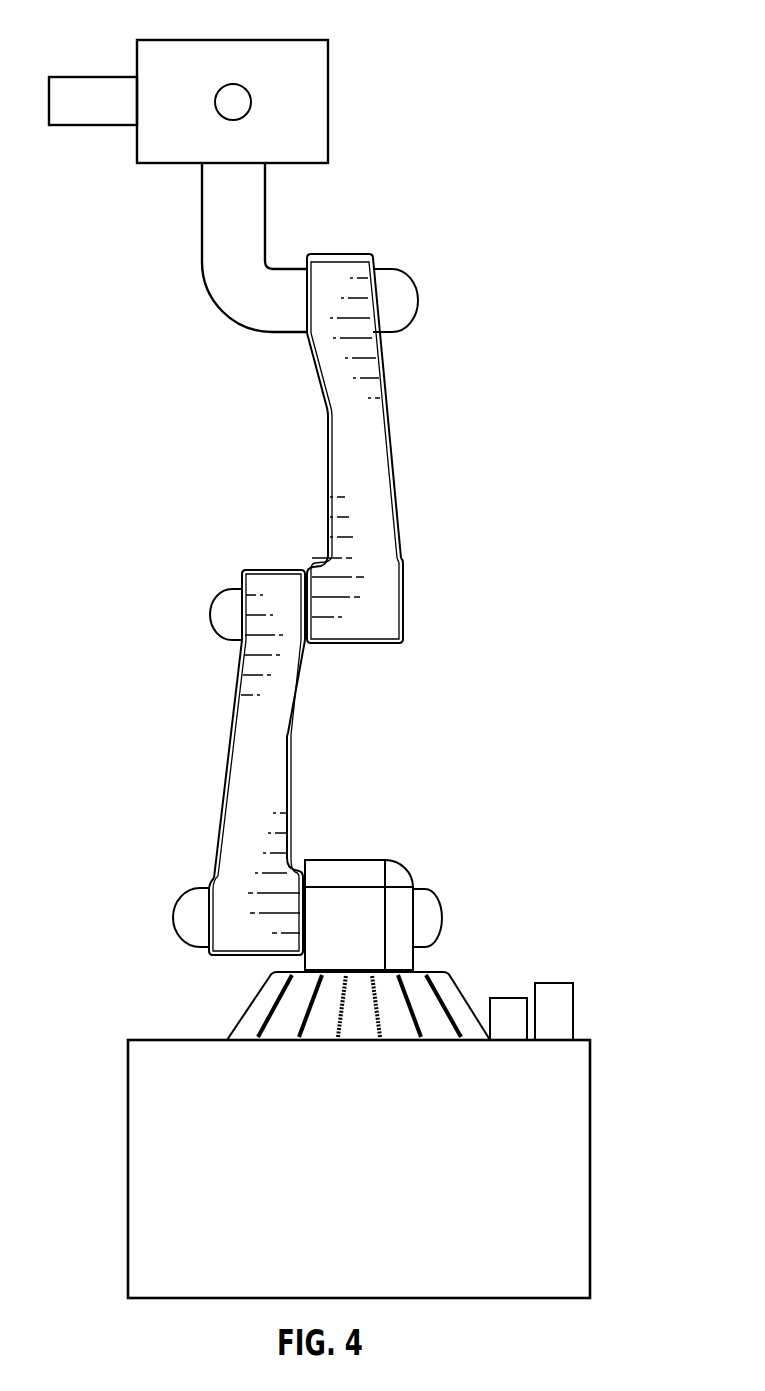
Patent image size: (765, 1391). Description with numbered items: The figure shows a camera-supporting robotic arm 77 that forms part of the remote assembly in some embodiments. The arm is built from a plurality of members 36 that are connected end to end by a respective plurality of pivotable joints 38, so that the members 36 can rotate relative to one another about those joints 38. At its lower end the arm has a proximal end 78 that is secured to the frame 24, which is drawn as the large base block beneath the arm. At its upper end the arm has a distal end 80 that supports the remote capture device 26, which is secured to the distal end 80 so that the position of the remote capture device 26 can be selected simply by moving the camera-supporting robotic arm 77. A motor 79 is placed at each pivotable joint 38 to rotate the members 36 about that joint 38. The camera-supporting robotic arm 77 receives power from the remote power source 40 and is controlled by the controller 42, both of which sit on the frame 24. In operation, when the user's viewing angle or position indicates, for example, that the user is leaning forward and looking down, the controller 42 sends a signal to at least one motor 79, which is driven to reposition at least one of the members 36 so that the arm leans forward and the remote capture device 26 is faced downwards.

The frame 24 is at (128, 1167).
The remote capture device 26 is at (202, 40).
The members 36 is at (372, 462).
The pivotable joints 38 is at (335, 253).
The remote power source 40 is at (573, 1012).
The controller 42 is at (508, 997).
The camera-supporting robotic arm 77 is at (486, 496).
The proximal end 78 is at (347, 858).
The motor 79 is at (418, 300).
The distal end 80 is at (202, 208).